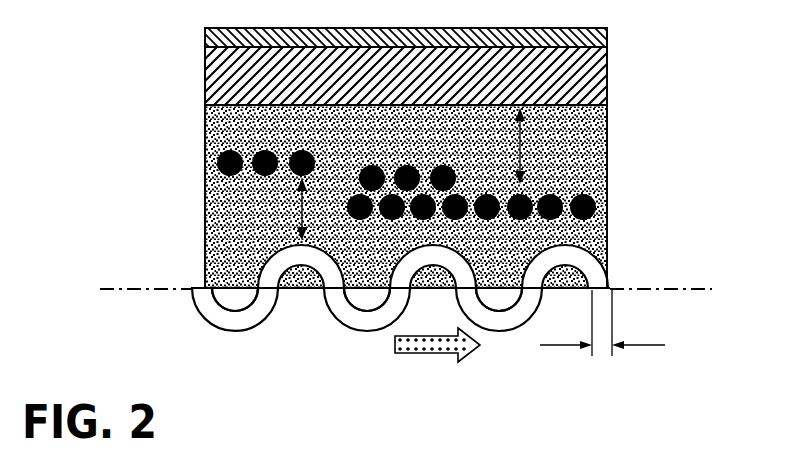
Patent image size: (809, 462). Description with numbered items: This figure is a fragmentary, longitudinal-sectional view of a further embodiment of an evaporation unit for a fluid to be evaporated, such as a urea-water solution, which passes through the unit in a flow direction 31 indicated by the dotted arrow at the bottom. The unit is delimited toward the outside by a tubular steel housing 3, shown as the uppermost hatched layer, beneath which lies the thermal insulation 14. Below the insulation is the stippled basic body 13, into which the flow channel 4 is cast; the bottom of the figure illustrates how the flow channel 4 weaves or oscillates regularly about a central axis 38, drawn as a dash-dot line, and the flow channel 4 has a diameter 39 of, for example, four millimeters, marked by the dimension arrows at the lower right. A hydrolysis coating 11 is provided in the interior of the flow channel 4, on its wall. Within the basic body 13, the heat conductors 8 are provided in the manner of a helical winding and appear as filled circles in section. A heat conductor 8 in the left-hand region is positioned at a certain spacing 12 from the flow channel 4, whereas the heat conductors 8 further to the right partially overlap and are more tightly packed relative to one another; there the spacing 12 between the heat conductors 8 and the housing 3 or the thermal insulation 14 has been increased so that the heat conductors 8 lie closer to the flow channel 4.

The housing 3 is at (608, 35).
The thermal insulation 14 is at (598, 78).
The basic body 13 is at (590, 158).
The heat conductors 8 is at (595, 200).
The flow channel 4 is at (595, 260).
The hydrolysis coating 11 is at (275, 265).
The spacing 12 is at (285, 214).
The central axis 38 is at (137, 288).
The flow direction 31 is at (433, 355).
The diameter 39 is at (598, 345).